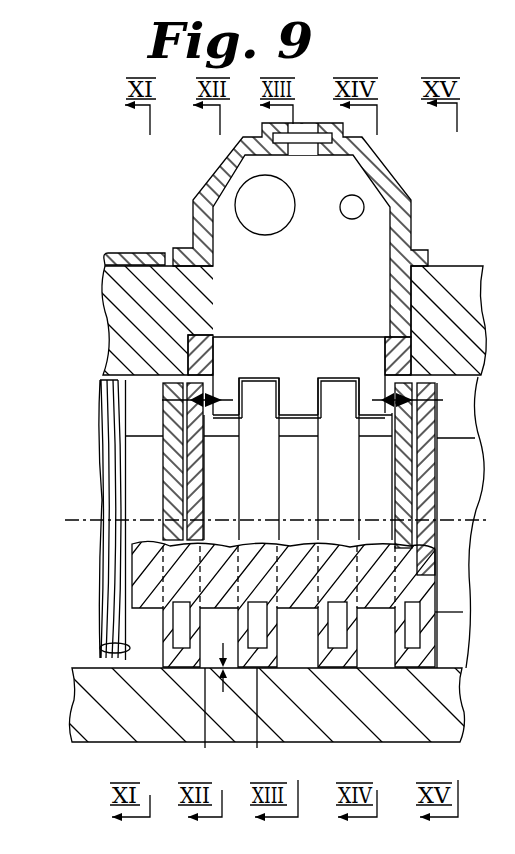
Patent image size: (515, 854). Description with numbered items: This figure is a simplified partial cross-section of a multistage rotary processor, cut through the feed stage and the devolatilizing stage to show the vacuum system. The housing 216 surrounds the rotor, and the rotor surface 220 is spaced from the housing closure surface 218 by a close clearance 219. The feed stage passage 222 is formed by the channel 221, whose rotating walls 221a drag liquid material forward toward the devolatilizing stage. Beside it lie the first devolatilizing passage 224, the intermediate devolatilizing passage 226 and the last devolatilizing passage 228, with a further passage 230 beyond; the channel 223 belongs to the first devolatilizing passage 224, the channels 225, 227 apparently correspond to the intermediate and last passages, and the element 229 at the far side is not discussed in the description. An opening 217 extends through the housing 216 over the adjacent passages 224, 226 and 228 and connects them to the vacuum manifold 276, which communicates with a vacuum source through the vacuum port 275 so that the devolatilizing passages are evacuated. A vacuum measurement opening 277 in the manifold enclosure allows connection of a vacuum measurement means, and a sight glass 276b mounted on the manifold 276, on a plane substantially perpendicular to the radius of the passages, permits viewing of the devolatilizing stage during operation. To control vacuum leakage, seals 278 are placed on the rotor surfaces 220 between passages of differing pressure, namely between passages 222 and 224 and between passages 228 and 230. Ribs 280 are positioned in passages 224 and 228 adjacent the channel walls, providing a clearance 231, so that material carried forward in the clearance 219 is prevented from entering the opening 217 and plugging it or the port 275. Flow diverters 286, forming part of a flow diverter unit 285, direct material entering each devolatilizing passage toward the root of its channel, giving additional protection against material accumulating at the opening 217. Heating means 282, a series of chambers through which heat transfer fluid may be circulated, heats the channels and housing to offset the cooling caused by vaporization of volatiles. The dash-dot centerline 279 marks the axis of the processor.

The housing 216 is at (122, 728).
The opening 217 is at (188, 252).
The closure surface of housing 218 is at (305, 658).
The close clearance 219 is at (212, 663).
The rotor surface 220 is at (261, 720).
The channel 221 is at (104, 418).
The rotating walls 221a is at (118, 632).
The feed stage passage 222 is at (137, 658).
The channel 223 is at (225, 428).
The first devolatilizing passage 224 is at (197, 720).
The second bar 225 is at (300, 430).
The intermediate devolatilizing passage 226 is at (293, 655).
The third bar 227 is at (375, 428).
The last devolatilizing passage 228 is at (377, 655).
The cylinder wall 229 is at (457, 420).
The passage 230 is at (455, 655).
The clearance 231 is at (305, 393).
The vacuum port 275 is at (287, 228).
The vacuum manifold 276 is at (390, 253).
The sight glass 276b is at (297, 138).
The vacuum measurement opening 277 is at (362, 208).
The seals 278 is at (168, 483).
The center axis 279 is at (100, 498).
The rib 280 is at (220, 350).
The heating means 282 is at (335, 655).
The flow diverter unit 285 is at (300, 344).
The flow diverters 286 is at (297, 402).